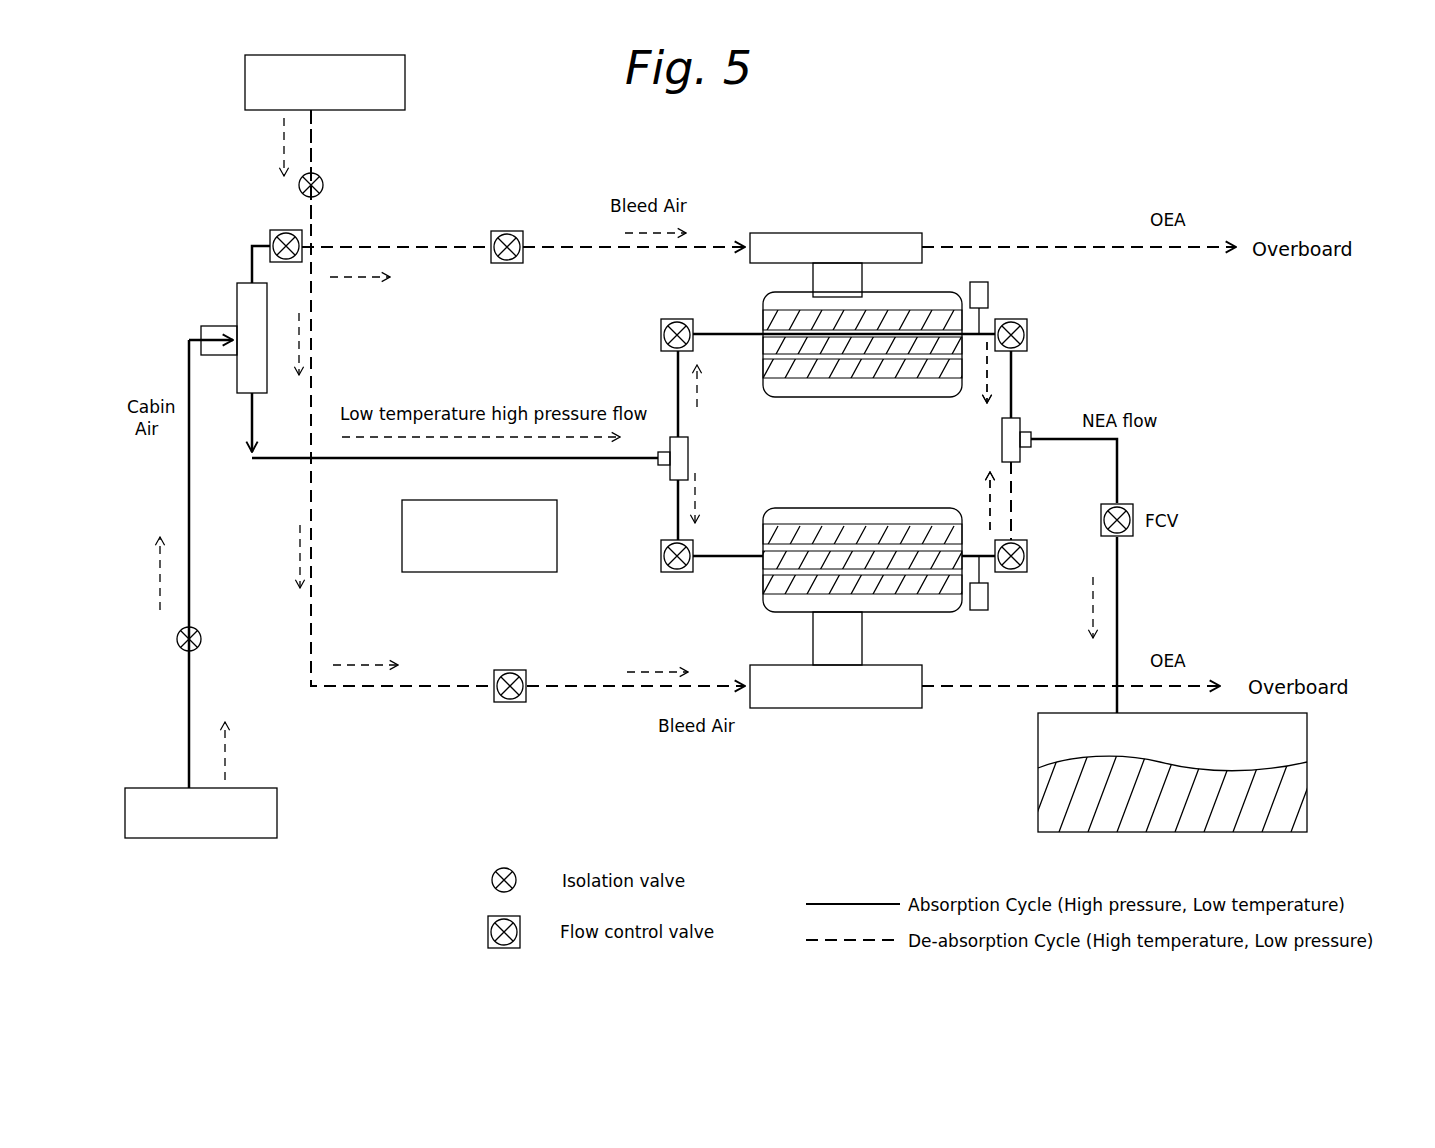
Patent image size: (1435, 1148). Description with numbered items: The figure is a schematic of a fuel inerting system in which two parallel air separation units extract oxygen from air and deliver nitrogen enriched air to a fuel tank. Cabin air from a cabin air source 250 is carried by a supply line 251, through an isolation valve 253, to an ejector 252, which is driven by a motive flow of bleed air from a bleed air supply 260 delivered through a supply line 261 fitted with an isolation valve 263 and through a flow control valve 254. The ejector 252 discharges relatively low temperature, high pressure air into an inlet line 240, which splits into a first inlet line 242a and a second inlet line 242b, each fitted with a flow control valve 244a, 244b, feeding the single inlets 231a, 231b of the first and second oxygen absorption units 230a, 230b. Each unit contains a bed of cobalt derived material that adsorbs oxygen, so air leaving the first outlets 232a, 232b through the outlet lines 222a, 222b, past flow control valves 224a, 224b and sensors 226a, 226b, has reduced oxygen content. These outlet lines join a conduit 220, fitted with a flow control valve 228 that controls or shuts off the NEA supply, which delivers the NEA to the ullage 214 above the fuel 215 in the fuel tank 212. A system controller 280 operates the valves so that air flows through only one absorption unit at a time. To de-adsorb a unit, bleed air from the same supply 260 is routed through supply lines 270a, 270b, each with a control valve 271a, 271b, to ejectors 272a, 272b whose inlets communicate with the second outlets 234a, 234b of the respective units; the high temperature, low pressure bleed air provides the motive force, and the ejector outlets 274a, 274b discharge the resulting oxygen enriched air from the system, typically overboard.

The bleed air supply 260 is at (245, 82).
The supply line 261 is at (311, 155).
The isolation valve 263 is at (325, 185).
The flow control valve 254 is at (270, 240).
The ejector 252 is at (237, 298).
The supply line 251 is at (189, 493).
The isolation valve 253 is at (180, 648).
The cabin air source 250 is at (200, 838).
The inlet line 240 is at (360, 458).
The system controller 280 is at (460, 572).
The control valve 271a is at (505, 231).
The supply line 270a is at (568, 247).
The ejector 272a is at (785, 233).
The second outlet 234a is at (847, 297).
The outlet of the ejector 274a is at (1050, 247).
The first sensor 226a is at (988, 290).
The flow control valve 224a is at (1027, 335).
The outlet line 222a is at (1011, 385).
The first outlet 232a is at (967, 337).
The oxygen absorption unit 230a is at (785, 397).
The inlet 231a is at (748, 334).
The flow control valve 244a is at (662, 330).
The first inlet line 242a is at (678, 375).
The oxygen absorption unit 230b is at (865, 508).
The first outlet 232b is at (985, 530).
The outlet line 222b is at (1011, 508).
The flow control valve 224b is at (1027, 565).
The second sensor 226b is at (979, 610).
The flow control valve 228 is at (1193, 517).
The conduit 220 is at (1117, 590).
The outlet of the ejector 274b is at (1195, 686).
The fuel tank 212 is at (1038, 790).
The ullage 214 is at (1283, 742).
The fuel 215 is at (1280, 810).
The flow control valve 244b is at (662, 563).
The second inlet line 242b is at (678, 505).
The inlet 231b is at (748, 556).
The control valve 271b is at (500, 702).
The supply line 270b is at (578, 686).
The ejector 272b is at (800, 708).
The second outlet 234b is at (860, 665).